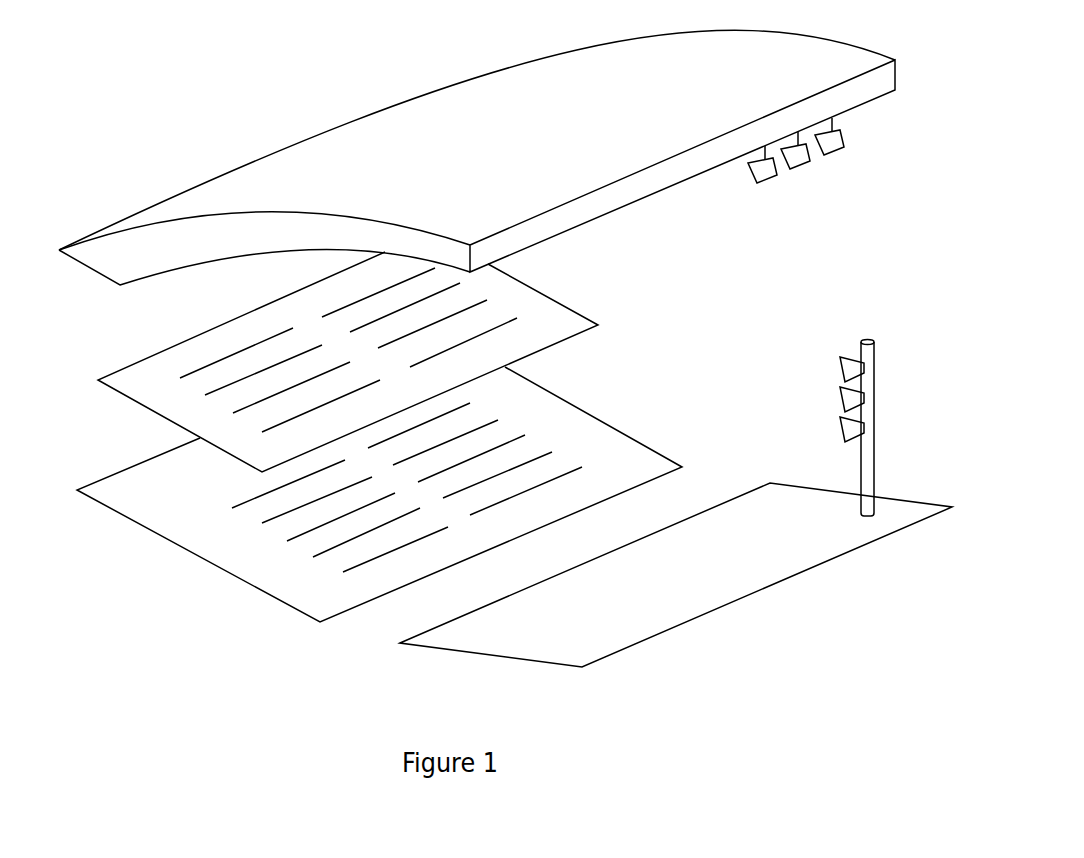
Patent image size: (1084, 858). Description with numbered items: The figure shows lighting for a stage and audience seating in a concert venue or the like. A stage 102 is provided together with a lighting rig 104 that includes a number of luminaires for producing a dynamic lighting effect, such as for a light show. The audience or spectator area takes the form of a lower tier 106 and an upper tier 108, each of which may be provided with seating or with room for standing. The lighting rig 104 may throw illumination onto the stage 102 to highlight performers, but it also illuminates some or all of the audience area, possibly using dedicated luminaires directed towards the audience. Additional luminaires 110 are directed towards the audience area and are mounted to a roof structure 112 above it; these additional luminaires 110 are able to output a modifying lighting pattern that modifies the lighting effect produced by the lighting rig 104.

The stage 102 is at (737, 583).
The lighting rig 104 is at (823, 388).
The lower tier 106 is at (223, 560).
The upper tier 108 is at (155, 392).
The additional luminaires 110 is at (820, 175).
The roof structure 112 is at (368, 128).